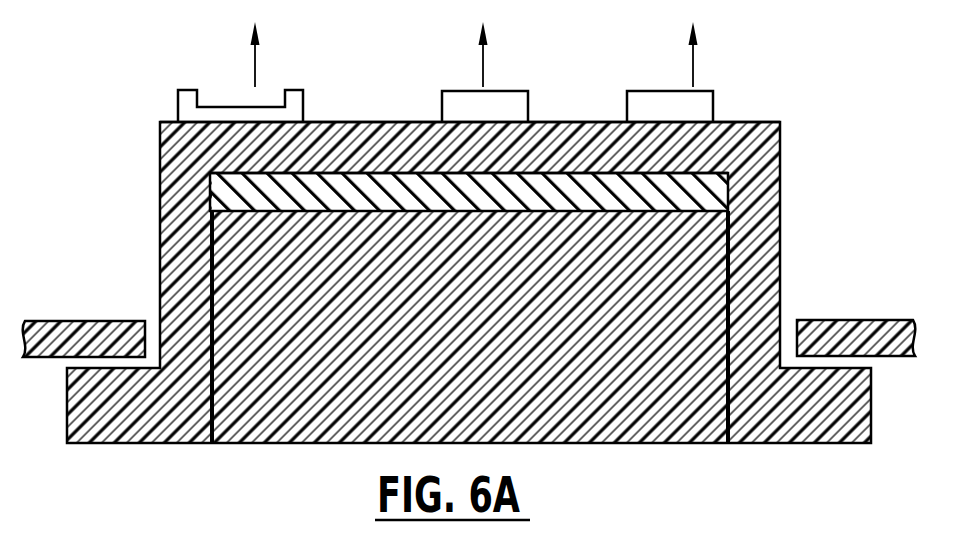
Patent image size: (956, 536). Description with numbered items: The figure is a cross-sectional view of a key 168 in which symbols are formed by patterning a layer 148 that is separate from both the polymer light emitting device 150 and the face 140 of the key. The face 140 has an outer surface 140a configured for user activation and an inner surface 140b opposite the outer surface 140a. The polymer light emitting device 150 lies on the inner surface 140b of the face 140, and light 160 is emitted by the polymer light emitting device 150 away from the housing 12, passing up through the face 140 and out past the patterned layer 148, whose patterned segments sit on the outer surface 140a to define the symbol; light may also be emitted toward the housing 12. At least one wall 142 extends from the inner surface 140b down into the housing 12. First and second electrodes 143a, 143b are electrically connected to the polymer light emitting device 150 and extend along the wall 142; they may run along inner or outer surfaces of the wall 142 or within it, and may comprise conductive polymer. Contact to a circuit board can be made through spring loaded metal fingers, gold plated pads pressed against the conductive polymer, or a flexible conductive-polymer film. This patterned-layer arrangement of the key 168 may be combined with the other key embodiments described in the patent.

The housing 12 is at (101, 352).
The face 140 is at (393, 160).
The outer surface 140a is at (402, 120).
The inner surface 140b is at (343, 177).
The wall 142 is at (181, 271).
The first electrode 143a is at (213, 340).
The second electrode 143b is at (712, 351).
The layer 148 is at (188, 98).
The polymer light emitting device 150 is at (487, 205).
The light 160 is at (485, 62).
The key 168 is at (806, 82).